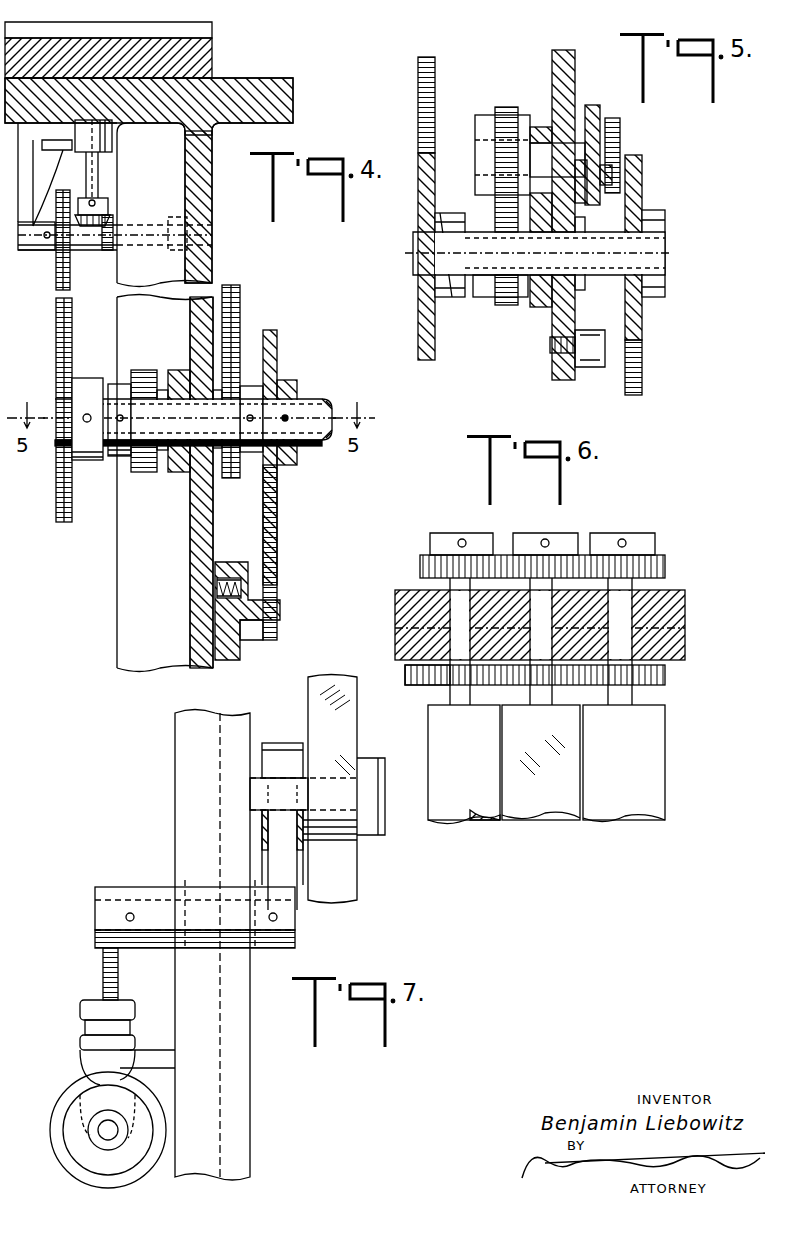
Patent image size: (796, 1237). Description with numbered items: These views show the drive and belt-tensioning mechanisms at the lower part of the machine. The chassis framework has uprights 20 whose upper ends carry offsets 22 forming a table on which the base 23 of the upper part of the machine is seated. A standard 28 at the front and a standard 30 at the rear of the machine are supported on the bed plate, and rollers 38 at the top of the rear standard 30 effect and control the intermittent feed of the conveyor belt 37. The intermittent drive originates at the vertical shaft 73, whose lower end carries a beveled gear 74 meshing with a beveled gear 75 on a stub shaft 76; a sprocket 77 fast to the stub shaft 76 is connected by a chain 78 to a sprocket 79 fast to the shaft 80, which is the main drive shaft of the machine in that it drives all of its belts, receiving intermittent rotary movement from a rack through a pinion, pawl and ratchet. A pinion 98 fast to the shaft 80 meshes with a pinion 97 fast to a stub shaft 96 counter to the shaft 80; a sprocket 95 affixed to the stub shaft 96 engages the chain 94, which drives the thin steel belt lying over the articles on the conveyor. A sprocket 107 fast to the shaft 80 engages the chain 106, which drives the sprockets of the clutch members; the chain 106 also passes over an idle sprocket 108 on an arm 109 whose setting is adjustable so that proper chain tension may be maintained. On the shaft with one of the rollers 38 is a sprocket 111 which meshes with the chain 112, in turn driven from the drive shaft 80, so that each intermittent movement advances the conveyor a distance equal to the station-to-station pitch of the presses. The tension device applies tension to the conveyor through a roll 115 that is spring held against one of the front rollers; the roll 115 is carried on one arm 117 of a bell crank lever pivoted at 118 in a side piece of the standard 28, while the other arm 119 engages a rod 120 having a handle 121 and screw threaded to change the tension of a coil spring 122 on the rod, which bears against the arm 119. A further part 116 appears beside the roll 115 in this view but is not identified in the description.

In FIG. 4, the uprights 20 is at (192, 524).
In FIG. 5, the uprights 20 is at (552, 368).
In FIG. 4, the offsets 22 is at (212, 62).
In FIG. 4, the base 23 is at (212, 34).
In FIG. 5, the standard 28 is at (435, 90).
In FIG. 7, the standard 28 is at (250, 1030).
In FIG. 6, the standard 30 is at (685, 600).
In FIG. 6, the conveyor belt 37 is at (540, 790).
In FIG. 7, the conveyor belt 37 is at (325, 690).
In FIG. 6, the rollers 38 is at (590, 822).
In FIG. 4, the vertical shaft 73 is at (98, 165).
In FIG. 4, the beveled gear 74 is at (102, 225).
In FIG. 4, the beveled gear 75 is at (113, 230).
In FIG. 4, the stub shaft 76 is at (97, 240).
In FIG. 4, the sprocket 77 is at (62, 262).
In FIG. 4, the chain 78 is at (56, 340).
In FIG. 4, the sprocket 79 is at (60, 410).
In FIG. 5, the sprocket 79 is at (418, 200).
In FIG. 4, the shaft 80 is at (300, 410).
In FIG. 5, the shaft 80 is at (413, 258).
In FIG. 4, the chain 94 is at (240, 296).
In FIG. 5, the chain 94 is at (610, 118).
In FIG. 4, the sprocket 95 is at (270, 360).
In FIG. 5, the sprocket 95 is at (592, 105).
In FIG. 4, the stub shaft 96 is at (176, 455).
In FIG. 5, the stub shaft 96 is at (475, 150).
In FIG. 5, the pinion 97 is at (507, 107).
In FIG. 4, the pinion 98 is at (142, 372).
In FIG. 5, the pinion 98 is at (505, 305).
In FIG. 4, the chain 106 is at (277, 530).
In FIG. 5, the chain 106 is at (642, 365).
In FIG. 4, the sprocket 107 is at (277, 480).
In FIG. 5, the sprocket 107 is at (642, 318).
In FIG. 4, the idle sprocket 108 is at (270, 560).
In FIG. 4, the arm 109 is at (232, 663).
In FIG. 5, the arm 109 is at (585, 367).
In FIG. 6, the sprocket 111 is at (665, 672).
In FIG. 6, the chain 112 is at (410, 685).
In FIG. 6, the roll 115 is at (428, 750).
In FIG. 7, the roll 115 is at (395, 775).
In FIG. 7, the bolt head 116 is at (282, 775).
In FIG. 7, the arm 117 is at (290, 875).
In FIG. 7, the pivot 118 is at (95, 915).
In FIG. 7, the arm 119 is at (103, 975).
In FIG. 7, the rod 120 is at (85, 1062).
In FIG. 7, the handle 121 is at (55, 1115).
In FIG. 7, the coil spring 122 is at (80, 1030).